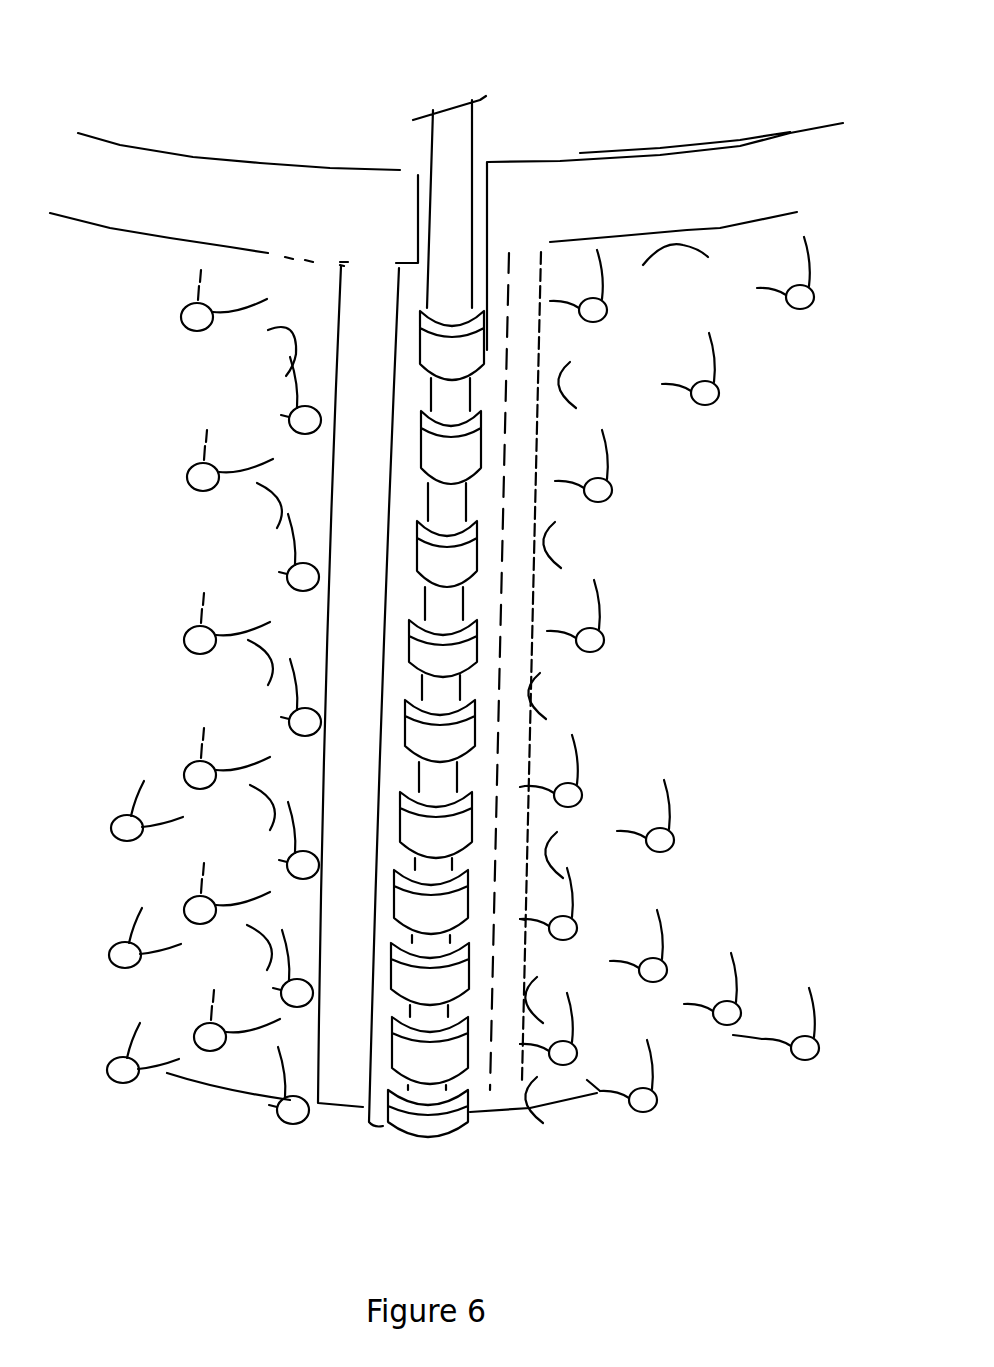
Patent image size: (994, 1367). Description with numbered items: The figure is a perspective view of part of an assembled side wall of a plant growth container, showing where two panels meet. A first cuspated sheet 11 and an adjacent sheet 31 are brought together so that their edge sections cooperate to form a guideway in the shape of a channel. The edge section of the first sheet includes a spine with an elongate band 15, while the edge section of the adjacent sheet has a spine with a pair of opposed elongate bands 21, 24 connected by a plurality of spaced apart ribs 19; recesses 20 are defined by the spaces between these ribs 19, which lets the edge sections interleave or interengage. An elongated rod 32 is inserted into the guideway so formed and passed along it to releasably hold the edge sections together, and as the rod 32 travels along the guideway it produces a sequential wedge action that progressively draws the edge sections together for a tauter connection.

The cuspated sheet 11 is at (183, 193).
The adjacent sheet 31 is at (778, 172).
The elongated rod 32 is at (455, 119).
The elongate band 24 is at (350, 506).
The elongate band 15 is at (400, 620).
The elongate band 21 is at (498, 588).
The recesses 20 is at (442, 783).
The spaced apart ribs 19 is at (382, 1150).